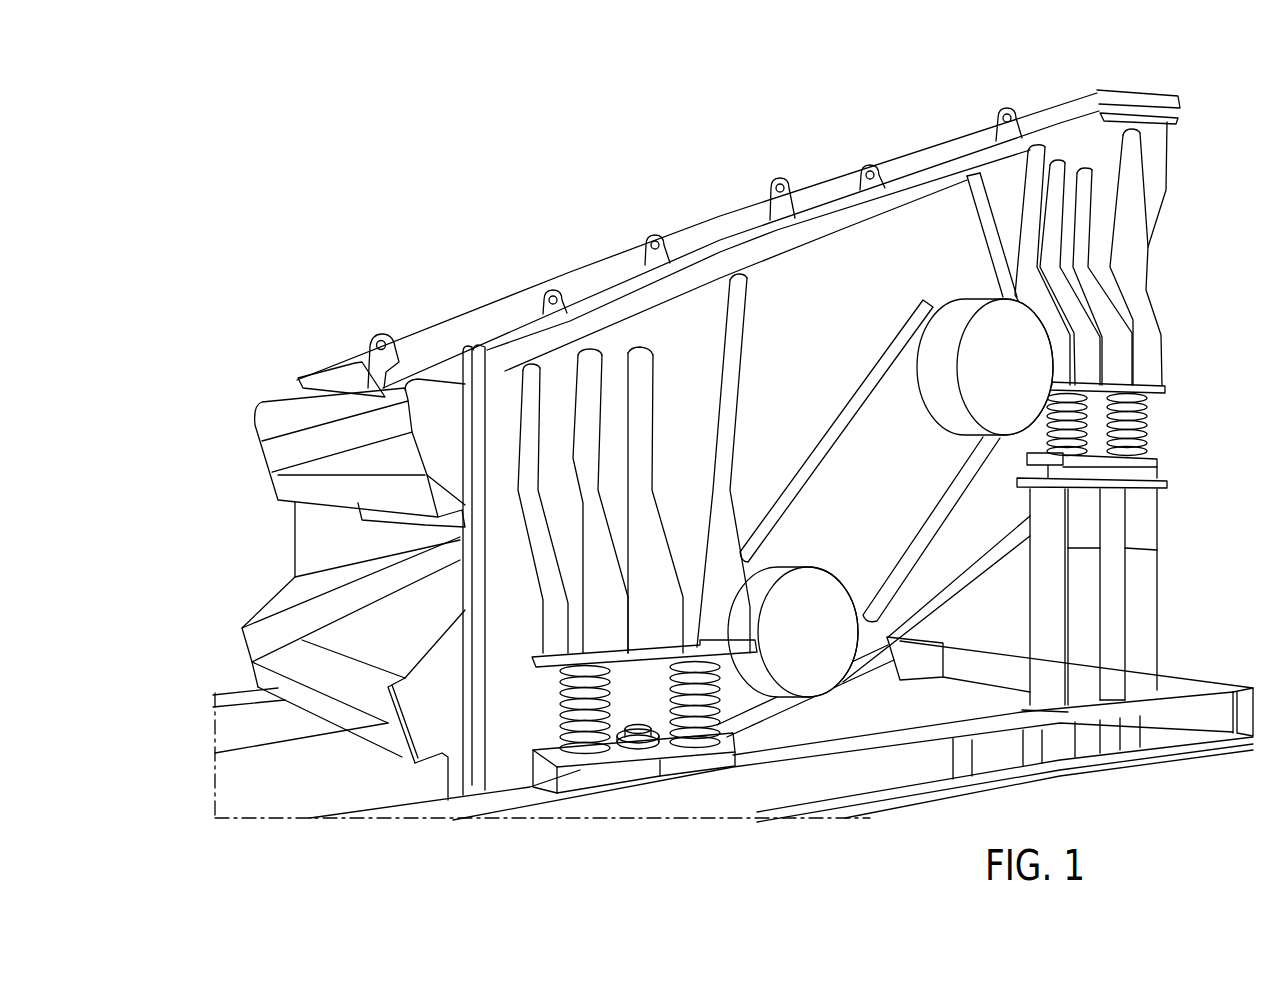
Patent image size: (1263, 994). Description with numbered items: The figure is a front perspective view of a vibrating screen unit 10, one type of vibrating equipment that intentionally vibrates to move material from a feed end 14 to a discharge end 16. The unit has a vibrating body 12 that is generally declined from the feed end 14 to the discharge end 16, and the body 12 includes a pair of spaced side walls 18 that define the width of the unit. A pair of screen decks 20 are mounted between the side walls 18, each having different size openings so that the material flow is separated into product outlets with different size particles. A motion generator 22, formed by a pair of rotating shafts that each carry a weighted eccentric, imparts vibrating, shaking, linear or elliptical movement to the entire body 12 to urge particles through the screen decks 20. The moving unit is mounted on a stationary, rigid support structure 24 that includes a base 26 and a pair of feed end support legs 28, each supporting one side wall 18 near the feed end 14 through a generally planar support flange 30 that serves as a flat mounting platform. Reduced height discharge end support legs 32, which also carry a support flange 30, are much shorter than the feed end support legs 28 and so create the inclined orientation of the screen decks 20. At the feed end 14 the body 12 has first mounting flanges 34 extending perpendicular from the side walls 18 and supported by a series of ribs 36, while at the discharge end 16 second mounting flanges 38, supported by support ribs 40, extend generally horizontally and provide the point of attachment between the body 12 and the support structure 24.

The vibrating screen unit 10 is at (580, 246).
The vibrating body 12 is at (1166, 208).
The feed end 14 is at (1138, 92).
The discharge end 16 is at (293, 545).
The side walls 18 is at (445, 336).
The screen decks 20 is at (265, 460).
The motion generator 22 is at (826, 697).
The support structure 24 is at (1180, 677).
The base 26 is at (1181, 750).
The feed end support legs 28 is at (1158, 530).
The support flange 30 is at (1153, 455).
The discharge end support legs 32 is at (571, 777).
The first mounting flanges 34 is at (1153, 380).
The ribs 36 is at (1152, 328).
The second mounting flanges 38 is at (735, 660).
The support ribs 40 is at (552, 620).